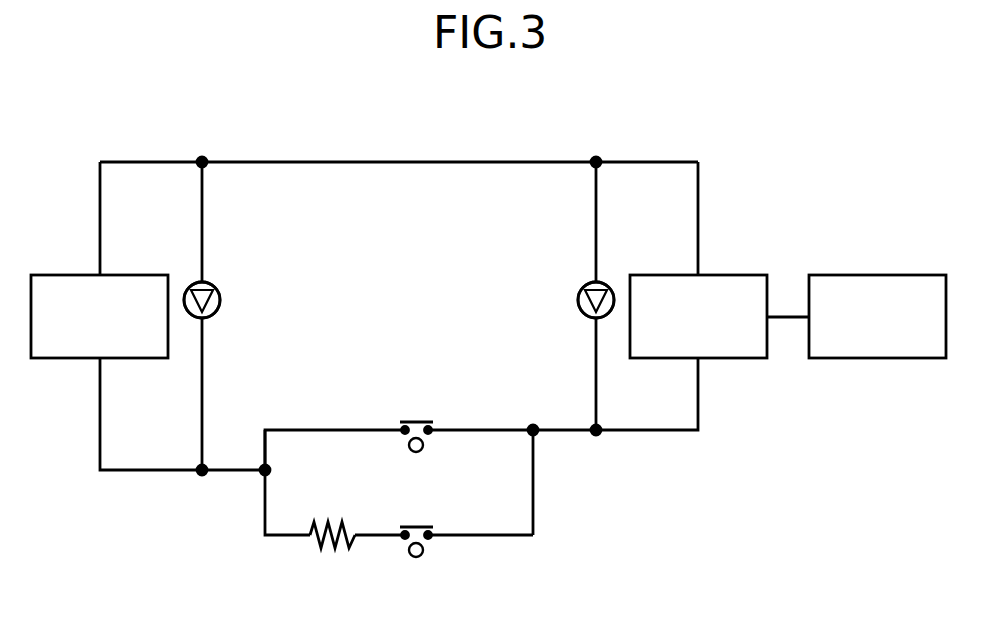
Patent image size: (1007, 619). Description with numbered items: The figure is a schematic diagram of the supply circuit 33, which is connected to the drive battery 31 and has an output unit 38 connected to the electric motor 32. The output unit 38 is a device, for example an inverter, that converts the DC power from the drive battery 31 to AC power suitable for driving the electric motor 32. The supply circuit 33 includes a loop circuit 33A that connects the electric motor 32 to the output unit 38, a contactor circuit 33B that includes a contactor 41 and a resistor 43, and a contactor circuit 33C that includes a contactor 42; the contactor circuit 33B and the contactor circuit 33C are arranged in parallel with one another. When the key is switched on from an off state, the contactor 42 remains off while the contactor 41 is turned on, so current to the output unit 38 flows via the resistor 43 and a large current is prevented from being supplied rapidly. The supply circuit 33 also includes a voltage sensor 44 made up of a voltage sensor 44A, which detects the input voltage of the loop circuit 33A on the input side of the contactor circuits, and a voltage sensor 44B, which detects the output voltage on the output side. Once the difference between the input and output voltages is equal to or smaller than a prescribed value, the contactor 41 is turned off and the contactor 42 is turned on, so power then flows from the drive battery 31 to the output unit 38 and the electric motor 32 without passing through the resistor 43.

The supply circuit 33 is at (175, 150).
The loop circuit 33A is at (408, 161).
The contactor circuit 33B is at (490, 540).
The contactor circuit 33C is at (489, 428).
The drive battery 31 is at (116, 256).
The electric motor 32 is at (871, 256).
The output unit 38 is at (724, 256).
The contactor 41 is at (416, 526).
The contactor 42 is at (416, 421).
The resistor 43 is at (345, 525).
The voltage sensor 44 is at (399, 311).
The voltage sensor 44A is at (222, 300).
The voltage sensor 44B is at (576, 300).